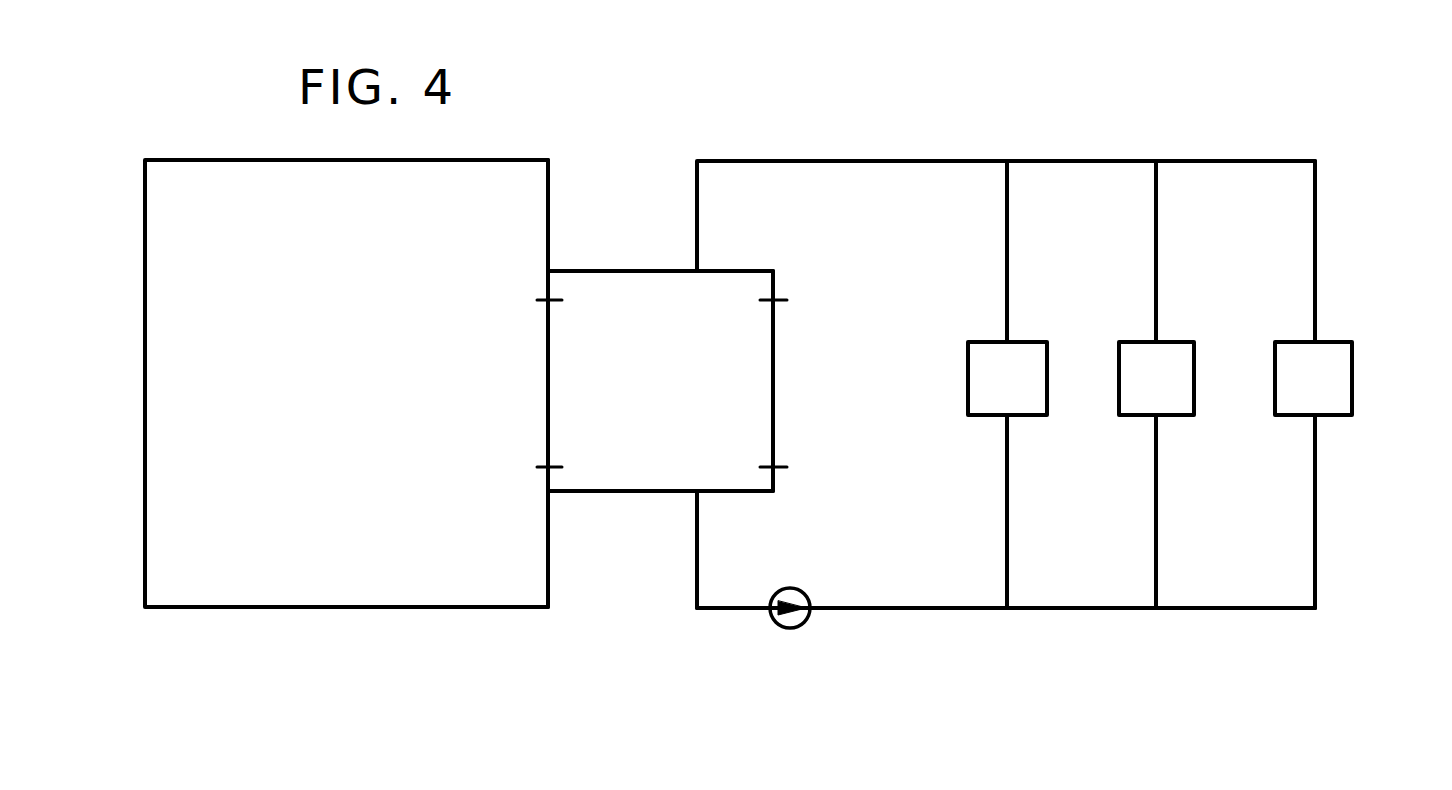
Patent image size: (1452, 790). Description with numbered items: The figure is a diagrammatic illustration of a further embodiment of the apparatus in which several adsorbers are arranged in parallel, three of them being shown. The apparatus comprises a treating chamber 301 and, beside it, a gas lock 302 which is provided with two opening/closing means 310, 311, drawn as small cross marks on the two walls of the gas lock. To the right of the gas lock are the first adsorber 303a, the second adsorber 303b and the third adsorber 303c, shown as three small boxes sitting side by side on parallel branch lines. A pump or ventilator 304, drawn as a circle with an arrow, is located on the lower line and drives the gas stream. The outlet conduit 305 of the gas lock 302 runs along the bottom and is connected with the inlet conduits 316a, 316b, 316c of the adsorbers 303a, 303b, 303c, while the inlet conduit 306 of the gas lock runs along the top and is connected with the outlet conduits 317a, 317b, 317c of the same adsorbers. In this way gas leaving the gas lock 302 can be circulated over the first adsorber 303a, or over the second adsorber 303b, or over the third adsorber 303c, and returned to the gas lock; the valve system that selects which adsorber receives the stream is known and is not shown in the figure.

The treating chamber 301 is at (307, 528).
The gas lock 302 is at (658, 420).
The first adsorber 303a is at (1022, 400).
The second adsorber 303b is at (1173, 398).
The third adsorber 303c is at (1322, 367).
The pump or ventilator 304 is at (788, 628).
The outlet conduit 305 is at (712, 612).
The inlet conduit 306 is at (849, 161).
The opening/closing means 310 is at (547, 428).
The opening/closing means 311 is at (774, 378).
The inlet conduit 316a is at (1007, 583).
The inlet conduit 316b is at (1156, 580).
The inlet conduit 316c is at (1315, 470).
The outlet conduit 317a is at (1007, 232).
The outlet conduit 317b is at (1156, 232).
The outlet conduit 317c is at (1315, 232).